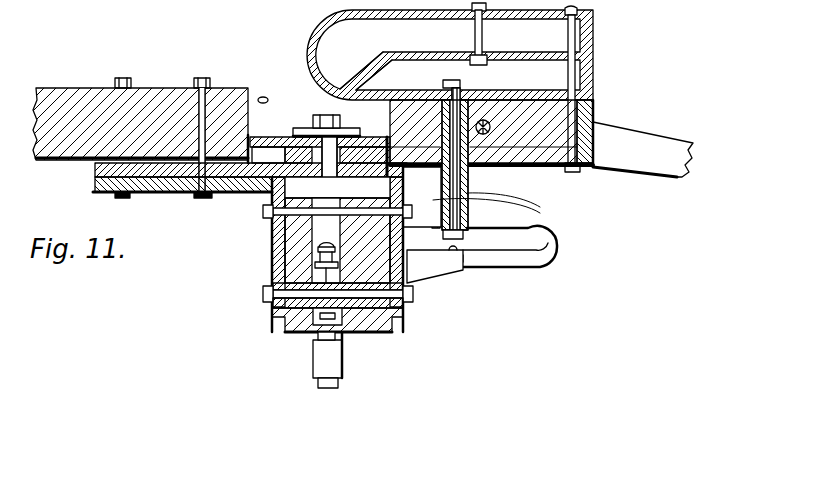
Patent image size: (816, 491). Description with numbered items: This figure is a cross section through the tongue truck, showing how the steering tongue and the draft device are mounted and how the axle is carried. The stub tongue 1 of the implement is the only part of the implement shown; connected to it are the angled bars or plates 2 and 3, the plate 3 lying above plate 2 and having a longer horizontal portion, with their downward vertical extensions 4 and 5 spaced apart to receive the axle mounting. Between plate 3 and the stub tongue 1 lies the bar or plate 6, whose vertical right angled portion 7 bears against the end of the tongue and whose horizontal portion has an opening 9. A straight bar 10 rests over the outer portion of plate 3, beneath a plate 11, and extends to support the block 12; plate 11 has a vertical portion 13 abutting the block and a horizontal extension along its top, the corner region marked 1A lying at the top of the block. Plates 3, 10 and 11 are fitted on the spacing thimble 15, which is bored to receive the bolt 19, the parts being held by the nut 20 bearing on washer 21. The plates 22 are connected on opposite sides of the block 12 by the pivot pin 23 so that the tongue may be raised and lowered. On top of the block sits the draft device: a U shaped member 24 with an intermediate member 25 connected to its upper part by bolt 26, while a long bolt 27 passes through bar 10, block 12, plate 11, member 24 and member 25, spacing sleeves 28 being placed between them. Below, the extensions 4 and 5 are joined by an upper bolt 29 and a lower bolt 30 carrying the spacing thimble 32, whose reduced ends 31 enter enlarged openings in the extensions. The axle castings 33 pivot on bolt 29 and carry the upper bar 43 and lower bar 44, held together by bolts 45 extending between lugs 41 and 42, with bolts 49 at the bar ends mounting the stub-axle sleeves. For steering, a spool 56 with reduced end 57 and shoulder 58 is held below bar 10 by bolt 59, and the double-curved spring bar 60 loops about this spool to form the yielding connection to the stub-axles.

The stub tongue 1 is at (67, 110).
The housing corner 1A is at (595, 92).
The angled bar or plate 2 is at (103, 193).
The angled bar or plate 3 is at (95, 175).
The downward vertical extension 4 is at (270, 268).
The downward vertical extension 5 is at (405, 318).
The bar or plate 6 is at (152, 168).
The vertical right angled portion 7 is at (250, 157).
The opening 9 is at (266, 146).
The straight bar or plate 10 is at (548, 168).
The plate or bar 11 is at (422, 197).
The block 12 is at (582, 122).
The right angled vertically extending portion 13 is at (403, 113).
The spacing thimble or sleeve 15 is at (345, 153).
The bolt 19 is at (262, 196).
The nut 20 is at (341, 126).
The washer 21 is at (312, 129).
The plates 22 is at (643, 149).
The bolt or pivot pin 23 is at (487, 121).
The U shaped member 24 is at (314, 33).
The horizontally extending member 25 is at (388, 54).
The bolt 26 is at (477, 40).
The long bolt 27 is at (568, 33).
The spacing sleeves or thimbles 28 is at (583, 72).
The bolt 29 is at (272, 230).
The bolt 30 is at (414, 293).
The reduced ends 31 is at (380, 334).
The spacing sleeve or thimble 32 is at (363, 333).
The members or castings 33 is at (272, 242).
The lugs or projections 41 is at (408, 268).
The lugs or projections 42 is at (317, 334).
The horizontally extending bar or plate 43 is at (337, 240).
The bar or plate 44 is at (317, 337).
The bolts 45 is at (272, 285).
The bolts 49 is at (328, 390).
The spool or thimble 56 is at (472, 192).
The reduced end 57 is at (553, 165).
The shoulder or flange 58 is at (468, 168).
The bolt 59 is at (472, 200).
The spring bar or member 60 is at (535, 232).